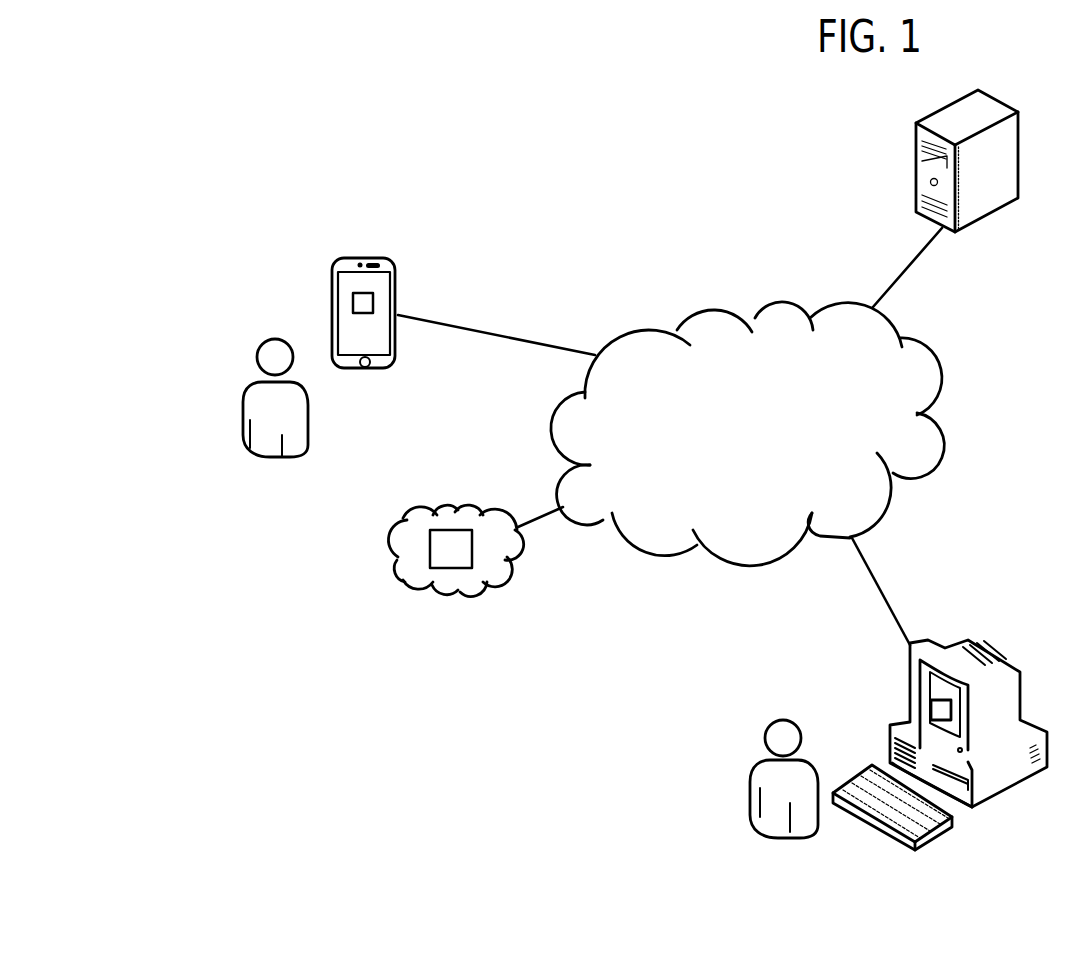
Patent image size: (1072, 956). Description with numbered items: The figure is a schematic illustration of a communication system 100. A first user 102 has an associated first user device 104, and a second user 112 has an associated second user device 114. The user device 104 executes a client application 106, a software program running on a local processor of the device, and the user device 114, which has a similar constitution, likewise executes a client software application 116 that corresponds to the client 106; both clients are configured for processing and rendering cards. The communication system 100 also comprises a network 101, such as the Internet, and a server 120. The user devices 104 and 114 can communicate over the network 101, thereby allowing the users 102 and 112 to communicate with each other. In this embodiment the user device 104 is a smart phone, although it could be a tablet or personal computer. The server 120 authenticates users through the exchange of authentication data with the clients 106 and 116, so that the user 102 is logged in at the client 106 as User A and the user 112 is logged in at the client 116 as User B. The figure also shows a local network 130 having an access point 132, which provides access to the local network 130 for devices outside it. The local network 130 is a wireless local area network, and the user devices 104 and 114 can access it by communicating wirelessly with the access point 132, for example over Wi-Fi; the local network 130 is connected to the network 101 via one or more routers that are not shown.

The communication system 100 is at (288, 147).
The network 101 is at (793, 310).
The first user 102 is at (247, 427).
The first user device 104 is at (332, 285).
The client application 106 is at (365, 303).
The second user 112 is at (783, 718).
The second user device 114 is at (988, 788).
The client software application 116 is at (931, 712).
The server 120 is at (920, 163).
The local network 130 is at (480, 514).
The access point 132 is at (452, 567).